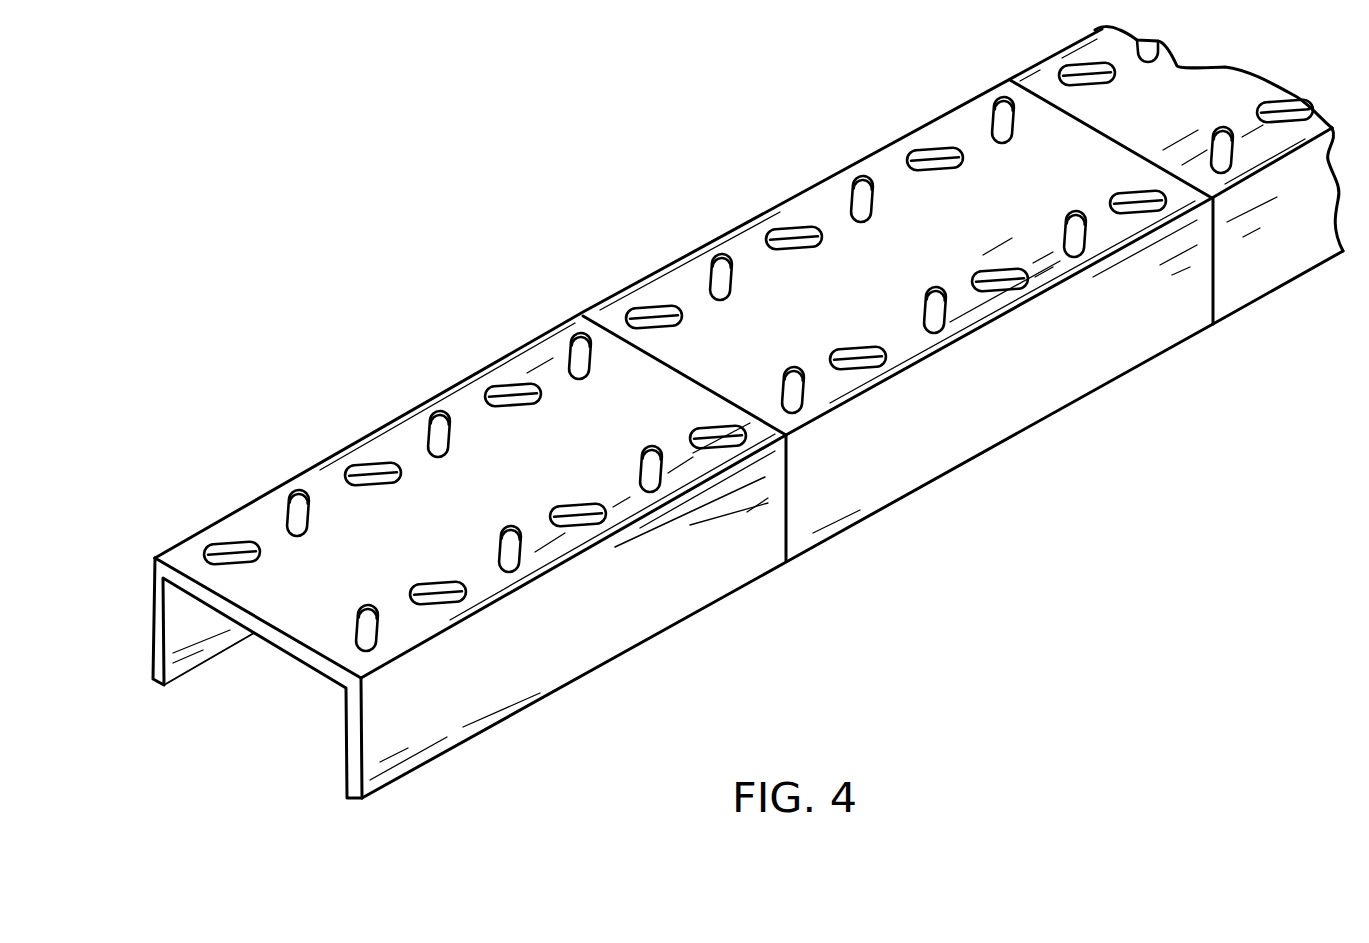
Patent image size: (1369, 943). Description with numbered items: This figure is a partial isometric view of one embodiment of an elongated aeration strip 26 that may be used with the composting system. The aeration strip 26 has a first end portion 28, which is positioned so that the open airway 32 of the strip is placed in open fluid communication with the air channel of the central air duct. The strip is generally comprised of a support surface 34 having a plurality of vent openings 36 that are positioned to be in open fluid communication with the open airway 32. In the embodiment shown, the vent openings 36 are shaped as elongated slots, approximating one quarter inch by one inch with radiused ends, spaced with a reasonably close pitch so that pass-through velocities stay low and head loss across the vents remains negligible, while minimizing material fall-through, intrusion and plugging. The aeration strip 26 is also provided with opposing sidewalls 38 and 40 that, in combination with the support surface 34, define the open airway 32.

The aeration strip 26 is at (831, 207).
The first end portion 28 is at (185, 542).
The open airway 32 is at (272, 685).
The support surface 34 is at (550, 460).
The vent opening 36 is at (570, 357).
The sidewall 38 is at (405, 733).
The sidewall 40 is at (200, 657).